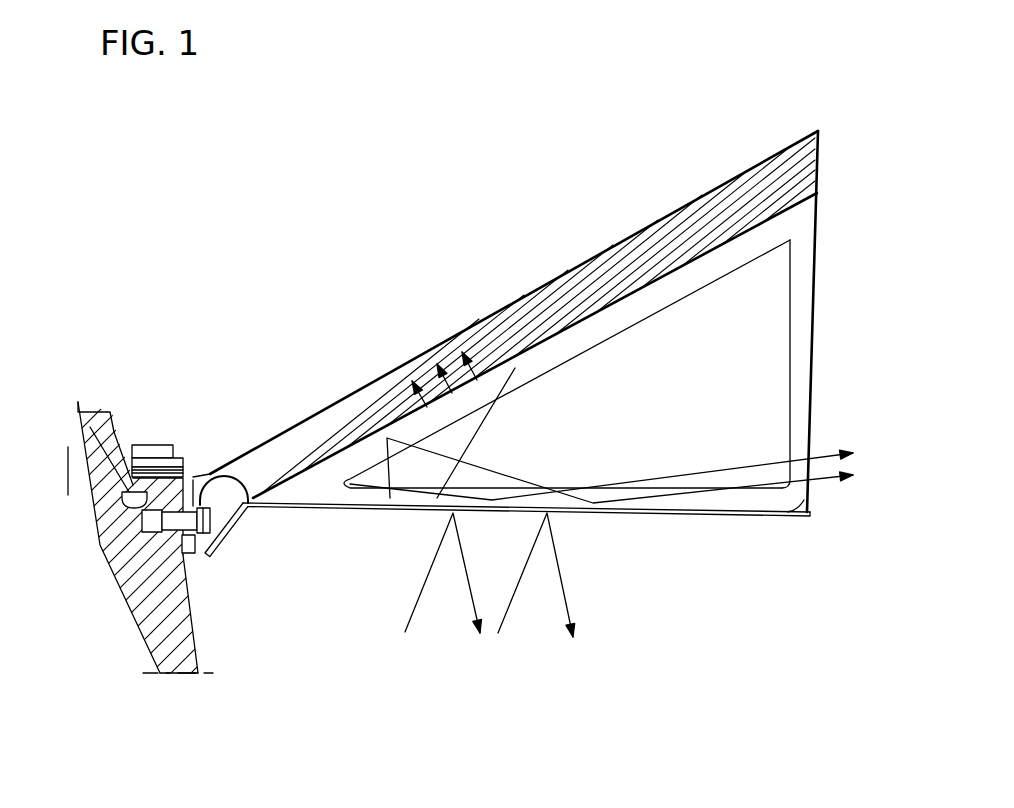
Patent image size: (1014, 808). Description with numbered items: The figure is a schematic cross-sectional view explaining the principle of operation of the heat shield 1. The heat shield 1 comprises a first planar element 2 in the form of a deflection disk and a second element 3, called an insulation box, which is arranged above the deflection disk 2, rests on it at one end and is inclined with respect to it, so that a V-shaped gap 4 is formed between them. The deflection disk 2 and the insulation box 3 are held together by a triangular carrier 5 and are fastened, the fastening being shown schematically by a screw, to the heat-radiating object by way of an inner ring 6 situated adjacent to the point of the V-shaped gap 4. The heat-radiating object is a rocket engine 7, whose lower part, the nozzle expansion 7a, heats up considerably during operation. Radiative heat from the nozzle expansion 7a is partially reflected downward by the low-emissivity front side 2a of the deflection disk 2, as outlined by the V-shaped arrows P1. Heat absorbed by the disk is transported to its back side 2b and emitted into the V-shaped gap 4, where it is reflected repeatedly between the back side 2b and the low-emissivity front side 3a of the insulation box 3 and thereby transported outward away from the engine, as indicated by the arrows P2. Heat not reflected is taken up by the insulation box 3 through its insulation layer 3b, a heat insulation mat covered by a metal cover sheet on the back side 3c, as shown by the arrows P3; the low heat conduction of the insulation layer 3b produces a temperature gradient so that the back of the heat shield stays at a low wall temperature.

The heat shield 1 is at (838, 172).
The first planar element 2 is at (549, 535).
The front side of the deflection disk 2a is at (630, 513).
The back side of the deflection disk 2b is at (792, 508).
The second element 3 is at (550, 308).
The front side of the insulation box 3a is at (552, 338).
The insulation layer 3b is at (644, 262).
The back side of the insulation box 3c is at (470, 325).
The V-shaped gap 4 is at (732, 375).
The triangular carrier 5 is at (800, 347).
The inner ring 6 is at (212, 474).
The rocket engine 7 is at (122, 607).
The nozzle expansion 7a is at (182, 647).
The V-shaped arrows P1 is at (460, 637).
The arrows indicating multiple reflections P2 is at (613, 475).
The arrows indicating heat flow into the insulation layer P3 is at (412, 381).